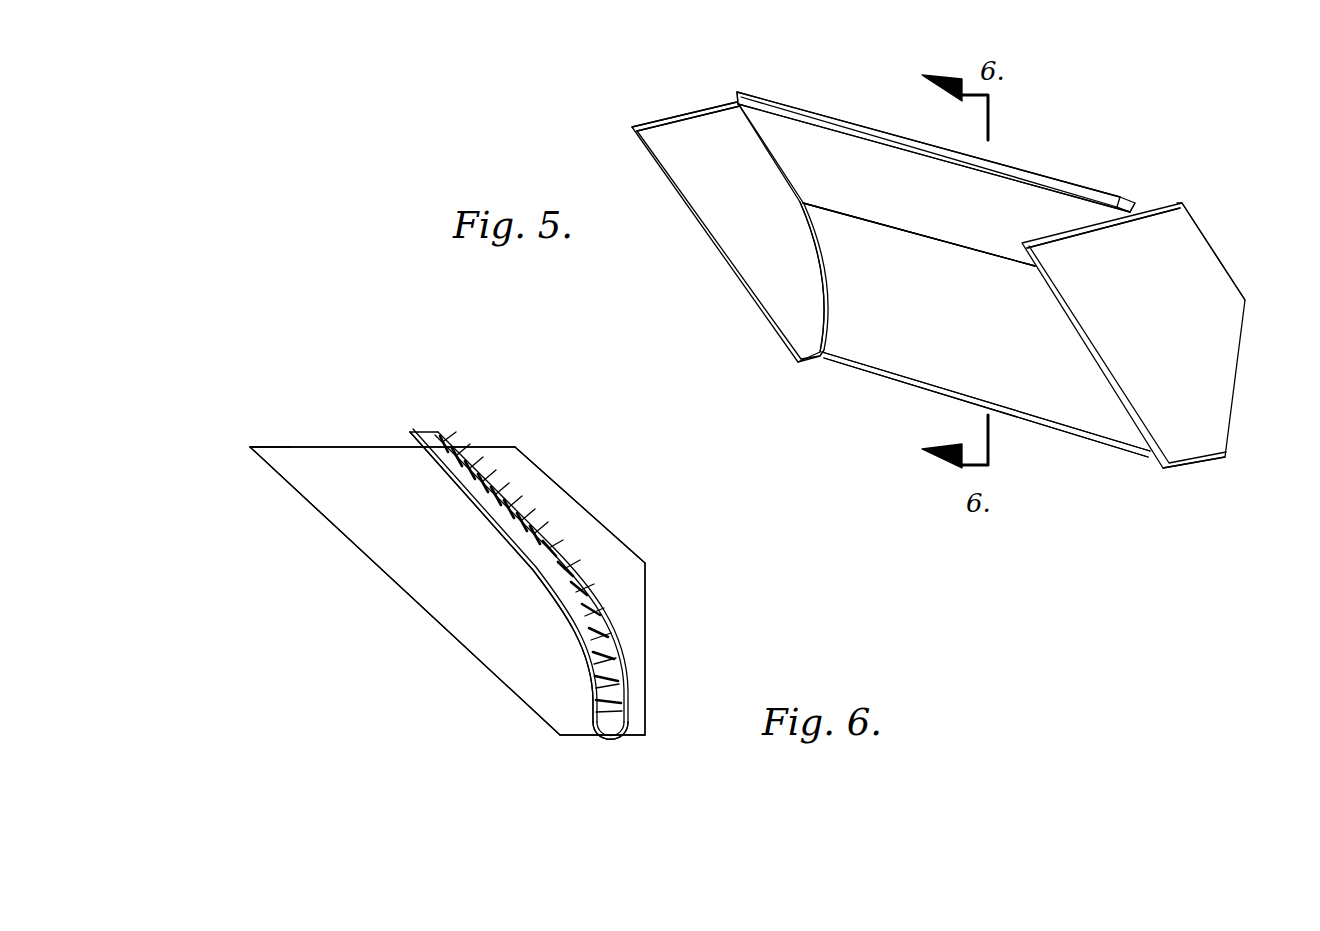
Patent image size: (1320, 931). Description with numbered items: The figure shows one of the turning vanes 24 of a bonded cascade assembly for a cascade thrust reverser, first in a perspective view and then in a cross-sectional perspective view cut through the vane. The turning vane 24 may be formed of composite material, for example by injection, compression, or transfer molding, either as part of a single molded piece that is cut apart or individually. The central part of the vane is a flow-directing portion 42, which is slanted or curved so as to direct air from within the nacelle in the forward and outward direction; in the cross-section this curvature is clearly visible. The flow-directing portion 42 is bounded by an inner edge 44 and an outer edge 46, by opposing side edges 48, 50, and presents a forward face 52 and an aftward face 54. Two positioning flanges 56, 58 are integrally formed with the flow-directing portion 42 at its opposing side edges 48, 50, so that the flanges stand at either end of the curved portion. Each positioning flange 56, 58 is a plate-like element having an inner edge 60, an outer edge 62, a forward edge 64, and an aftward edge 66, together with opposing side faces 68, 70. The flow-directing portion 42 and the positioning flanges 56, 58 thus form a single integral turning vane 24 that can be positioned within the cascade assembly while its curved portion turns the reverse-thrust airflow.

In FIG. 5, the turning vane 24 is at (673, 86).
In FIG. 6, the turning vane 24 is at (348, 426).
In FIG. 5, the flow-directing portion 42 is at (828, 150).
In FIG. 6, the flow-directing portion 42 is at (483, 472).
In FIG. 5, the inner edge 44 is at (905, 380).
In FIG. 6, the inner edge 44 is at (603, 740).
In FIG. 5, the outer edge 46 is at (1037, 172).
In FIG. 6, the outer edge 46 is at (420, 432).
In FIG. 5, the side edge 48 is at (803, 202).
In FIG. 5, the side edge 50 is at (1120, 215).
In FIG. 5, the forward face 52 is at (945, 325).
In FIG. 6, the forward face 52 is at (532, 567).
In FIG. 6, the aftward face 54 is at (587, 567).
In FIG. 5, the positioning flange 56 is at (1195, 243).
In FIG. 5, the positioning flange 58 is at (684, 138).
In FIG. 6, the positioning flange 58 is at (547, 497).
In FIG. 5, the inner edge 60 is at (807, 363).
In FIG. 6, the inner edge 60 is at (637, 735).
In FIG. 5, the outer edge 62 is at (712, 102).
In FIG. 6, the outer edge 62 is at (285, 447).
In FIG. 5, the forward edge 64 is at (670, 190).
In FIG. 6, the forward edge 64 is at (432, 613).
In FIG. 5, the aftward edge 66 is at (800, 100).
In FIG. 6, the aftward edge 66 is at (598, 523).
In FIG. 5, the side face 68 is at (1147, 335).
In FIG. 5, the side face 70 is at (759, 219).
In FIG. 6, the side face 70 is at (407, 527).